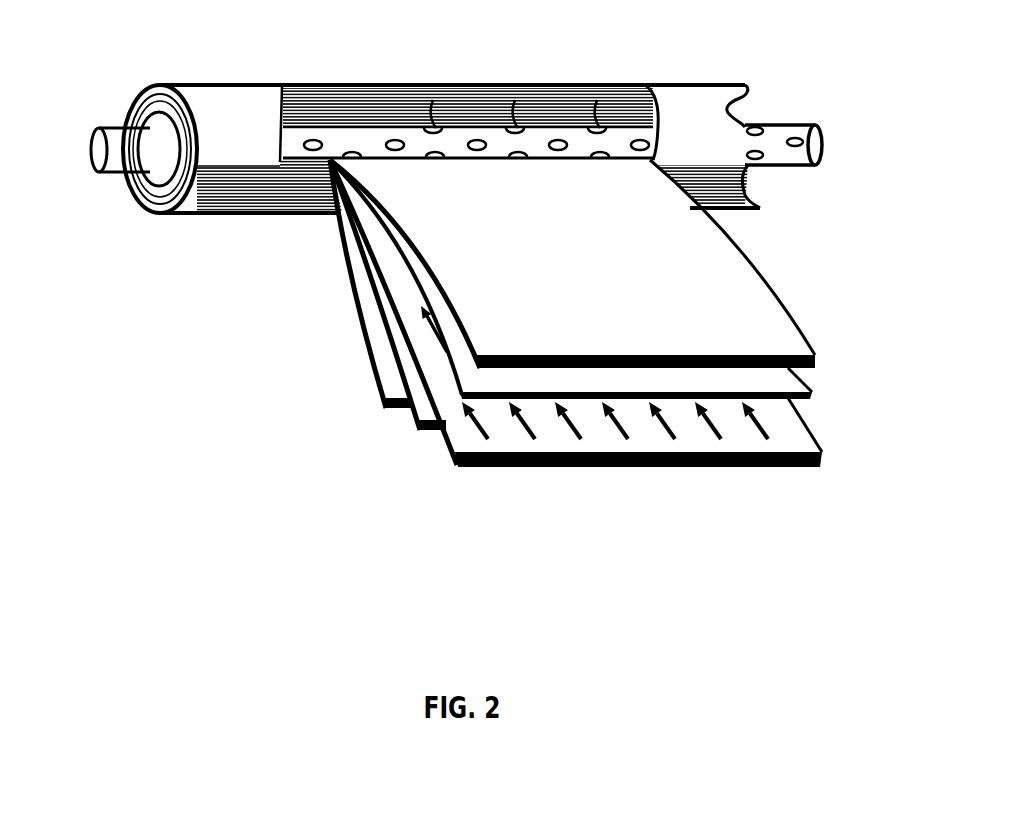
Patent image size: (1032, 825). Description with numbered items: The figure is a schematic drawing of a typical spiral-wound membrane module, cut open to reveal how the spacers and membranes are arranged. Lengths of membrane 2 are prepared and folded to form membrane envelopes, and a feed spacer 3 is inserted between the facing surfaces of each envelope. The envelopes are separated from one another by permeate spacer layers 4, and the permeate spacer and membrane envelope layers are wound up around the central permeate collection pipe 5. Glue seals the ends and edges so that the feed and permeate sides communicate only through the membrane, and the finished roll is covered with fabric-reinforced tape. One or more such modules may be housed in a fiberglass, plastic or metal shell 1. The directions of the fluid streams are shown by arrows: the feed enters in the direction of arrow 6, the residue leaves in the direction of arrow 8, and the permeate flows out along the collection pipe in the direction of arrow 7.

The shell 1 is at (223, 82).
The membrane 2 is at (812, 385).
The feed spacer 3 is at (816, 352).
The permeate spacer layers 4 is at (820, 438).
The central permeate collection pipe 5 is at (112, 117).
The feed flow arrow 6 is at (487, 250).
The permeate flow arrow 7 is at (823, 148).
The residue flow arrow 8 is at (755, 190).